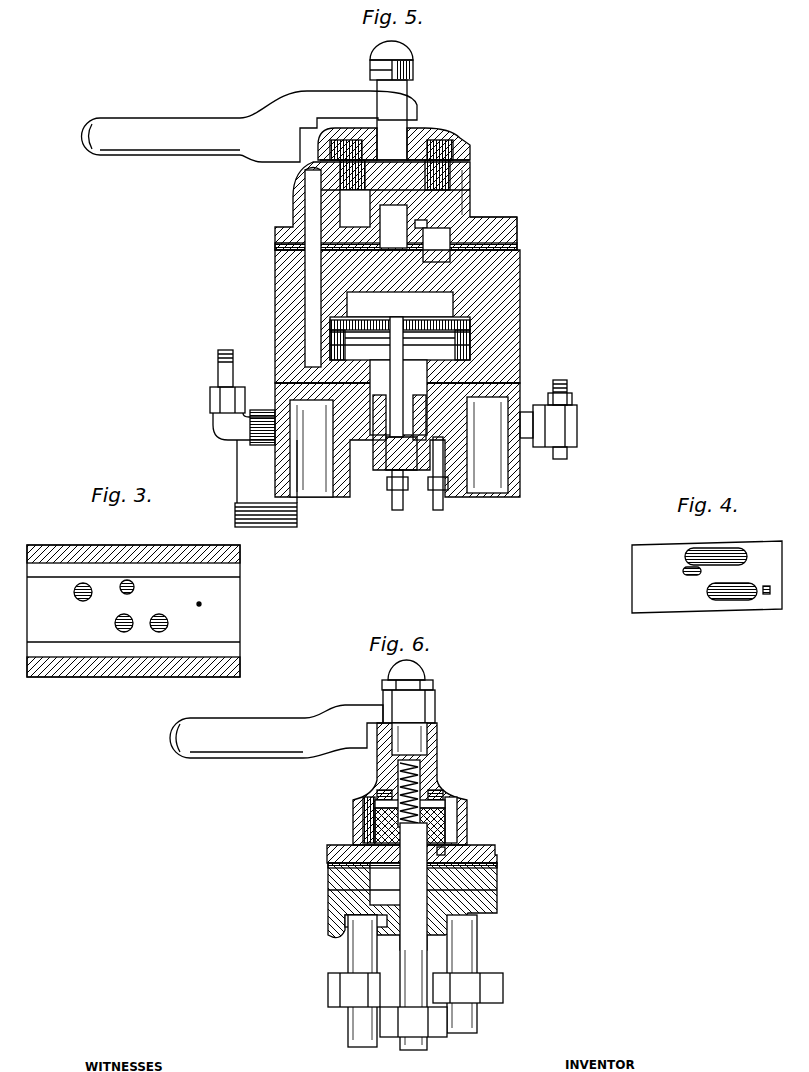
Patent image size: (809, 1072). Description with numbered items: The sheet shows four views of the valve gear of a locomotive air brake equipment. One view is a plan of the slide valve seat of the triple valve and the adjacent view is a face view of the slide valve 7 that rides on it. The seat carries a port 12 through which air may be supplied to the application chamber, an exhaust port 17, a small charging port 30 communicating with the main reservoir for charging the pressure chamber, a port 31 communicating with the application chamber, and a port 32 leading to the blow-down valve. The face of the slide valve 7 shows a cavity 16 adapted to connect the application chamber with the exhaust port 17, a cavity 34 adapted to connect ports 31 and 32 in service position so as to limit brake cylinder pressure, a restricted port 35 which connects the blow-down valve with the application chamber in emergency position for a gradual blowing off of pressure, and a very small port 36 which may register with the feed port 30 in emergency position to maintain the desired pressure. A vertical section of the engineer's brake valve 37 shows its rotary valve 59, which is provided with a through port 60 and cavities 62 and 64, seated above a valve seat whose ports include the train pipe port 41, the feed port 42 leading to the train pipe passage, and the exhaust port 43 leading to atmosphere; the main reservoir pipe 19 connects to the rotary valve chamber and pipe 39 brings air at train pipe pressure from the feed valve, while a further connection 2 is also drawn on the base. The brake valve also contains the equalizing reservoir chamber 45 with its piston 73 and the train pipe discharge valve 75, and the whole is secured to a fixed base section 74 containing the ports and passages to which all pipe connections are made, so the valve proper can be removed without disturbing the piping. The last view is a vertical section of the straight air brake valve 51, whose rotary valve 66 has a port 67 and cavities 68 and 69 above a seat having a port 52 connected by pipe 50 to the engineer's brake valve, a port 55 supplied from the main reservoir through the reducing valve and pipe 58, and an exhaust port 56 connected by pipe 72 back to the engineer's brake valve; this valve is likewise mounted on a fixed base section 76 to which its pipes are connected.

In FIG. 5, the valve body port 2 is at (500, 488).
In FIG. 4, the slide valve 7 is at (638, 575).
In FIG. 3, the port 12 is at (83, 583).
In FIG. 4, the cavity 16 is at (716, 552).
In FIG. 3, the exhaust port 17 is at (127, 580).
In FIG. 5, the main reservoir pipe 19 is at (318, 491).
In FIG. 3, the charging port 30 is at (201, 603).
In FIG. 3, the port 31 is at (159, 632).
In FIG. 3, the port 32 is at (122, 632).
In FIG. 4, the cavity 34 is at (735, 595).
In FIG. 4, the restricted port 35 is at (766, 595).
In FIG. 4, the port 36 is at (687, 573).
In FIG. 5, the engineer's brake valve 37 is at (472, 151).
In FIG. 5, the pipe 39 is at (240, 472).
In FIG. 5, the train pipe port 41 is at (520, 237).
In FIG. 5, the feed port 42 is at (357, 256).
In FIG. 5, the exhaust port 43 is at (282, 247).
In FIG. 5, the chamber 45 is at (440, 330).
In FIG. 5, the pipe 50 is at (438, 510).
In FIG. 6, the pipe 50 is at (465, 1026).
In FIG. 6, the straight air brake valve 51 is at (497, 851).
In FIG. 6, the port 52 is at (497, 876).
In FIG. 6, the port 55 is at (345, 872).
In FIG. 6, the exhaust port 56 is at (336, 890).
In FIG. 6, the pipe 58 is at (357, 1023).
In FIG. 5, the rotary valve 59 is at (470, 198).
In FIG. 5, the through port 60 is at (355, 206).
In FIG. 5, the cavity 62 is at (393, 222).
In FIG. 5, the cavity 64 is at (452, 236).
In FIG. 6, the rotary valve 66 is at (447, 812).
In FIG. 6, the port 67 is at (356, 845).
In FIG. 6, the cavity 68 is at (413, 841).
In FIG. 6, the cavity 69 is at (458, 846).
In FIG. 5, the pipe 72 is at (391, 503).
In FIG. 6, the pipe 72 is at (413, 1046).
In FIG. 5, the piston 73 is at (335, 343).
In FIG. 5, the base section 74 is at (523, 393).
In FIG. 5, the train pipe discharge valve 75 is at (417, 472).
In FIG. 6, the base section 76 is at (497, 911).